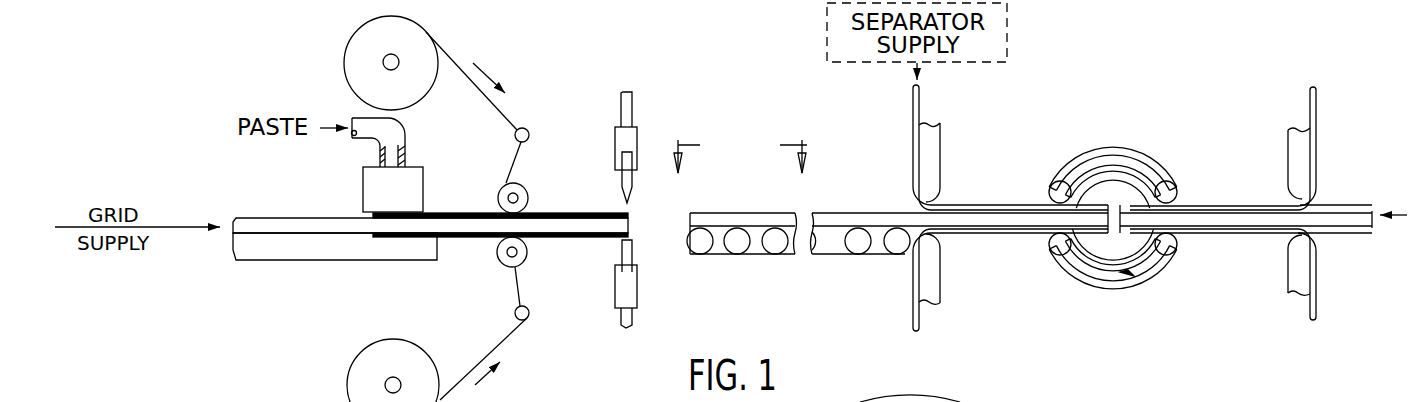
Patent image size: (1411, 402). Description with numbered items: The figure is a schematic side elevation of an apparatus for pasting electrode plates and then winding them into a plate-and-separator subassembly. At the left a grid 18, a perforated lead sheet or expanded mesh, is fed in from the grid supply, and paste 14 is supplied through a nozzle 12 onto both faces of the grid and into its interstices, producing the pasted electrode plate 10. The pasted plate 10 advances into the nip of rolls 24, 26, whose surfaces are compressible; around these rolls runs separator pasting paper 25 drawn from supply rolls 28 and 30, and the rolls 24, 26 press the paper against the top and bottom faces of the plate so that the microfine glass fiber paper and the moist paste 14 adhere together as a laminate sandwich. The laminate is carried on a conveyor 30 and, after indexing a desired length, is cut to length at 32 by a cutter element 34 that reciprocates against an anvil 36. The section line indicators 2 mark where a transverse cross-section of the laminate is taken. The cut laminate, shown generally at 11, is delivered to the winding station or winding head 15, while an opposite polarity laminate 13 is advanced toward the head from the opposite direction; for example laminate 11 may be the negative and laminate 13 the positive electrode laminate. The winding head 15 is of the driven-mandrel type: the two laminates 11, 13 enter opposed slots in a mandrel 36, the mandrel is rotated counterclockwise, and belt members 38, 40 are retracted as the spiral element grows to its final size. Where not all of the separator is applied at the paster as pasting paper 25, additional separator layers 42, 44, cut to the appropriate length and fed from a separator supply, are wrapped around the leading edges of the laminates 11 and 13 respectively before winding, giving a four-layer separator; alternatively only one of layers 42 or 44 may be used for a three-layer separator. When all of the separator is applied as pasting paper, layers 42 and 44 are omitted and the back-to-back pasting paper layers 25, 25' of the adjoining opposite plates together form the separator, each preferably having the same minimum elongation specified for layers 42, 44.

The section line of FIG. 2 is at (742, 174).
The electrode plate 10 is at (448, 200).
The laminate 11 is at (735, 170).
The nozzle 12 is at (368, 186).
The opposite polarity laminate 13 is at (1338, 197).
The paste 14 is at (478, 237).
The winding head 15 is at (1145, 102).
The grid 18 is at (285, 228).
The roll 24 is at (518, 187).
The separator pasting paper 25 is at (517, 216).
The pasting paper layer 25' is at (1339, 234).
The roll 26 is at (527, 252).
The roll 28 is at (355, 53).
The roll / conveyor 30 is at (372, 355).
The cut location 32 is at (637, 228).
The cutter element 34 is at (632, 200).
The anvil / mandrel 36 is at (632, 248).
The belt member 38 is at (1160, 158).
The belt member 40 is at (1162, 268).
The additional separator layer 42 is at (913, 103).
The additional separator layer 44 is at (1316, 98).